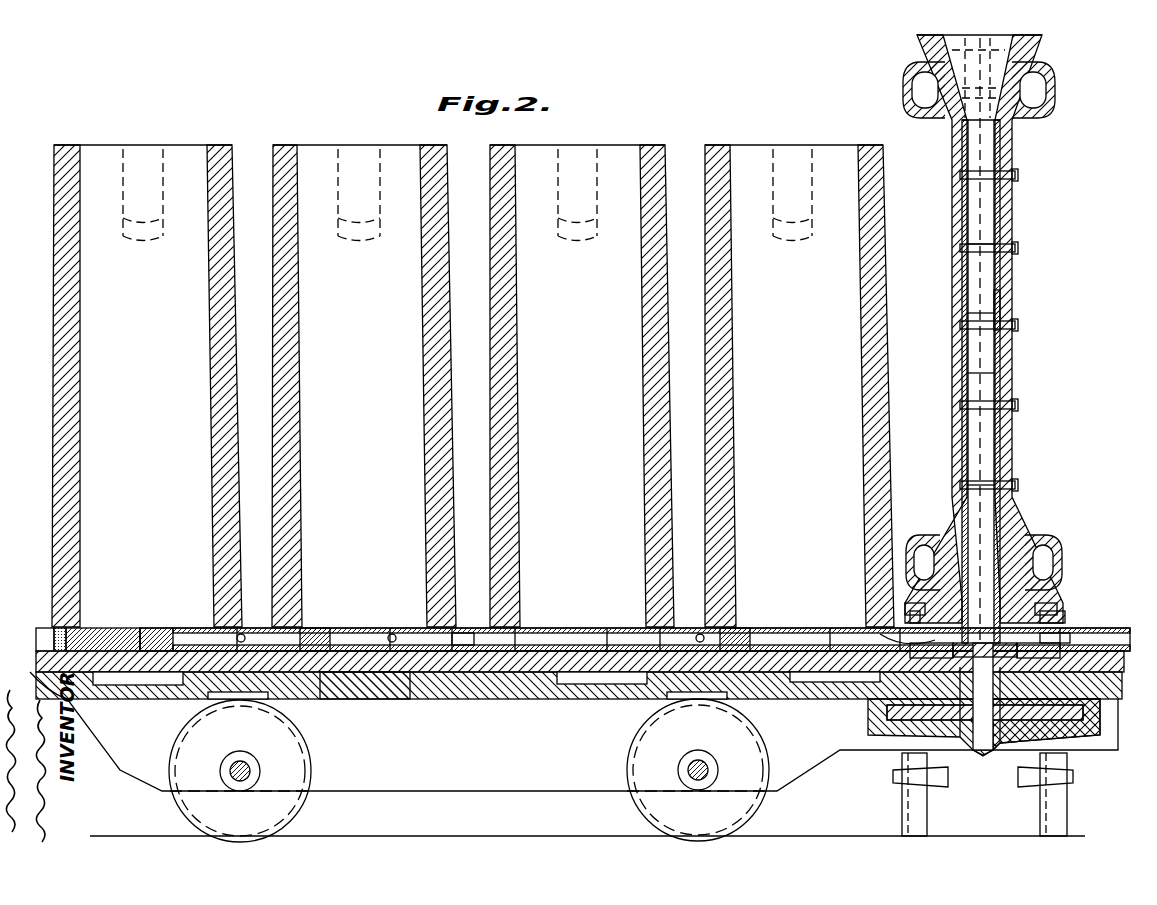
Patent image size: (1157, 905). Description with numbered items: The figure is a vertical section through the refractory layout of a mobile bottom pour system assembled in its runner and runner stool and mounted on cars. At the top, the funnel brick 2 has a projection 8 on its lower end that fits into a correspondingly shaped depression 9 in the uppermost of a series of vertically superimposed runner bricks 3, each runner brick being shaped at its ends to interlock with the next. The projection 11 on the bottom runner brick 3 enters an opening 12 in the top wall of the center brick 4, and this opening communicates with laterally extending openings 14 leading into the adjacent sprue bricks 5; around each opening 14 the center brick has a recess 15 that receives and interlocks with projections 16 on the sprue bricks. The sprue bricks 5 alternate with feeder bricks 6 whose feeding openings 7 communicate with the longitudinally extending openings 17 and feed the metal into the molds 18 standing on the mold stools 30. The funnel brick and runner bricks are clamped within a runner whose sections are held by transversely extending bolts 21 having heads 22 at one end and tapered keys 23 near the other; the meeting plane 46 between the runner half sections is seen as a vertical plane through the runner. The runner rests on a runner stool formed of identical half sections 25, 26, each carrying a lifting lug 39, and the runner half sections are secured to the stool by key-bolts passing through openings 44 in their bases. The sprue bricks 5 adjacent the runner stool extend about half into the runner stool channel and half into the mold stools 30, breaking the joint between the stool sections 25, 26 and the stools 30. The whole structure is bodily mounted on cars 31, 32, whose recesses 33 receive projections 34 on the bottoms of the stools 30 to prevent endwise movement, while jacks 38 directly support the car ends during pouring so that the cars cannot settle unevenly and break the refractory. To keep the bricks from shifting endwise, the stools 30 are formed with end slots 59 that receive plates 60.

The funnel brick 2 is at (1012, 55).
The runner bricks 3 is at (1008, 150).
The center brick 4 is at (1000, 753).
The sprue bricks 5 is at (474, 627).
The feeder bricks 6 is at (105, 632).
The feeding openings 7 is at (150, 628).
The projection 8 is at (997, 122).
The depression 9 is at (953, 135).
The projection 11 is at (1033, 610).
The opening 12 is at (960, 636).
The laterally extending openings 14 is at (1060, 611).
The recess 15 is at (935, 628).
The projections 16 is at (975, 745).
The longitudinally extending openings 17 is at (848, 636).
The molds 18 is at (278, 146).
The transversely extending bolts 21 is at (1018, 326).
The heads 22 is at (960, 326).
The tapered keys 23 is at (997, 312).
The runner stool half section 25 is at (910, 663).
The runner stool half section 26 is at (1057, 643).
The mold stools 30 is at (578, 657).
The car 31 is at (545, 791).
The car 32 is at (1088, 737).
The recesses 33 is at (412, 683).
The projections 34 is at (365, 676).
The jacks 38 is at (1053, 805).
The lifting lug 39 is at (1012, 532).
The openings 44 is at (903, 604).
The meeting plane 46 is at (983, 283).
The end slots 59 is at (60, 628).
The plates 60 is at (42, 628).